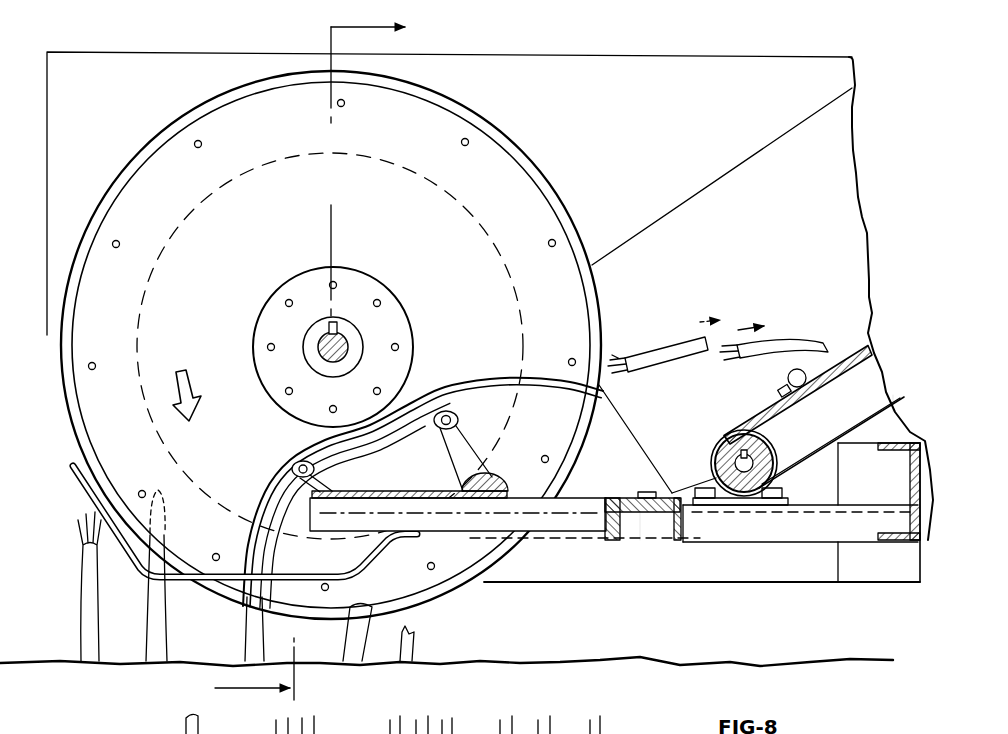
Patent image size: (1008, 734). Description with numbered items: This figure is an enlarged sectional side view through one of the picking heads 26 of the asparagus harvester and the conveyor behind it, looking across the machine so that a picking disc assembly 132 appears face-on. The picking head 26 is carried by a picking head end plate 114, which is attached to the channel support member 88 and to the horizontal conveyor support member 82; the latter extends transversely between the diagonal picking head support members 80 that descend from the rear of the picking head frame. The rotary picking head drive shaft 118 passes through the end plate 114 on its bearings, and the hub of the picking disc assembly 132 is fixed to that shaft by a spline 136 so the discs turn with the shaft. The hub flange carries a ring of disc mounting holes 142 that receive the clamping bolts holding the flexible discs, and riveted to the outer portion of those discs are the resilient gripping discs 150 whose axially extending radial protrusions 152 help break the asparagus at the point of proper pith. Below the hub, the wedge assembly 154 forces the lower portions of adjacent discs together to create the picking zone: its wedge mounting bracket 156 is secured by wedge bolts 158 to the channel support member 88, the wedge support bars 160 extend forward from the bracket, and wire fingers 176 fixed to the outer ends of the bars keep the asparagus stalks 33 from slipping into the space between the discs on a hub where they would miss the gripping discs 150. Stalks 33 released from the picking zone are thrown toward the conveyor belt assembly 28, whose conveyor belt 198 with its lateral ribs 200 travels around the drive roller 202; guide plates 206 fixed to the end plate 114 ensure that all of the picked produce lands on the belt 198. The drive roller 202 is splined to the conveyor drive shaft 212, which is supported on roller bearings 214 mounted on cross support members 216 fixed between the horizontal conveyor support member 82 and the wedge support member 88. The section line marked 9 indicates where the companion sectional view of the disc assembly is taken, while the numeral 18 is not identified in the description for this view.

The picking head 26 is at (168, 38).
The picking head end plate 114 is at (620, 123).
The conveyor belt assembly 28 is at (843, 263).
The horizontal conveyor support member 82 is at (894, 410).
The section line 9- 9 is at (305, 356).
The picking disc assembly 132 is at (64, 416).
The rotary picking head drive shaft 118 is at (346, 356).
The spline 136 is at (337, 328).
The disc mounting hole 142 is at (380, 301).
The wedge assembly 154 is at (585, 482).
The wire finger 176 is at (80, 488).
The wedge support bar 160 is at (562, 528).
The wedge mounting bracket 156 is at (624, 497).
The wedge bolt 158 is at (650, 516).
The cross support member 216 is at (838, 539).
The channel support member 88 is at (692, 520).
The diagonal picking head support member 80 is at (926, 530).
The roller bearing 214 is at (760, 500).
The drive roller 202 is at (879, 512).
The conveyor drive shaft 212 is at (740, 455).
The conveyor belt 198 is at (756, 420).
The guide plate 206 is at (772, 248).
The lateral rib 200 is at (795, 366).
The asparagus stalk 33 is at (664, 346).
The corn stalks 18 is at (80, 572).
The gripping disc 150 is at (446, 695).
The radial protrusion 152 is at (382, 726).